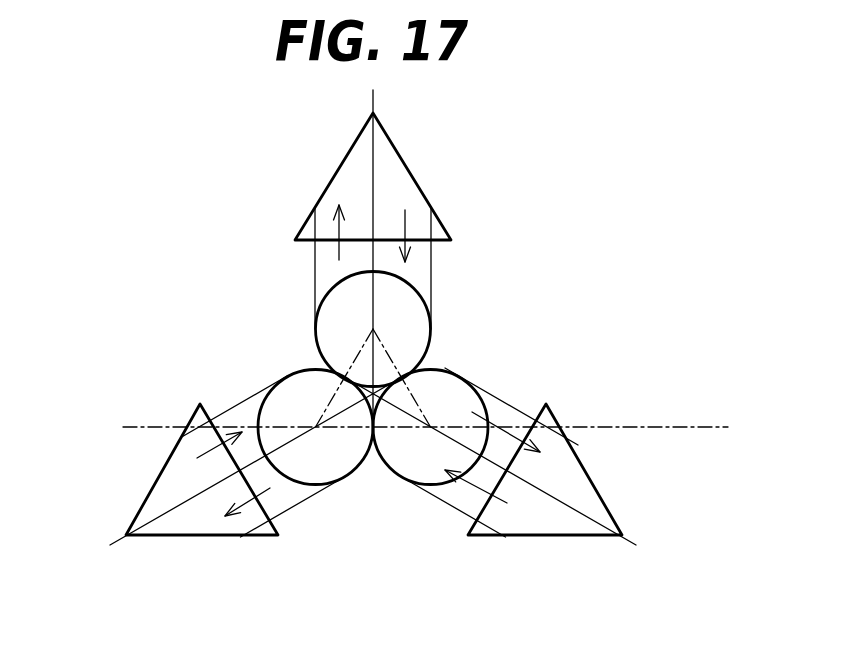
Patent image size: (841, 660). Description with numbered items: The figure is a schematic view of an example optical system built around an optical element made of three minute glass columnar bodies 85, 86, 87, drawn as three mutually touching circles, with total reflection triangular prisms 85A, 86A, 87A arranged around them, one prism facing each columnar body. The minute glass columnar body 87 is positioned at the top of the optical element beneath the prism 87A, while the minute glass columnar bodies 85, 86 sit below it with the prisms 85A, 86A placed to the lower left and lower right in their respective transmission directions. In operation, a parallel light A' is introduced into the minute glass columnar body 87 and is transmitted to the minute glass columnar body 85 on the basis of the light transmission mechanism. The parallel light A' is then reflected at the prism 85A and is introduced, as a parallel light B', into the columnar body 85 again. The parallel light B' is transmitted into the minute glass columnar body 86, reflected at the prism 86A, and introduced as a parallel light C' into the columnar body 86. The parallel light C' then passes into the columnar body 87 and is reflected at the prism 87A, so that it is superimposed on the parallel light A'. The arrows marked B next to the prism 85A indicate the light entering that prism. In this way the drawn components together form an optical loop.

The minute glass columnar body 85 is at (337, 458).
The minute glass columnar body 86 is at (410, 467).
The minute glass columnar body 87 is at (425, 328).
The total reflection triangular prism 85A is at (162, 488).
The total reflection triangular prism 86A is at (590, 487).
The total reflection triangular prism 87A is at (331, 182).
The parallel light A' is at (335, 375).
The light beam B is at (192, 416).
The parallel light B' is at (511, 395).
The parallel light C' is at (398, 391).